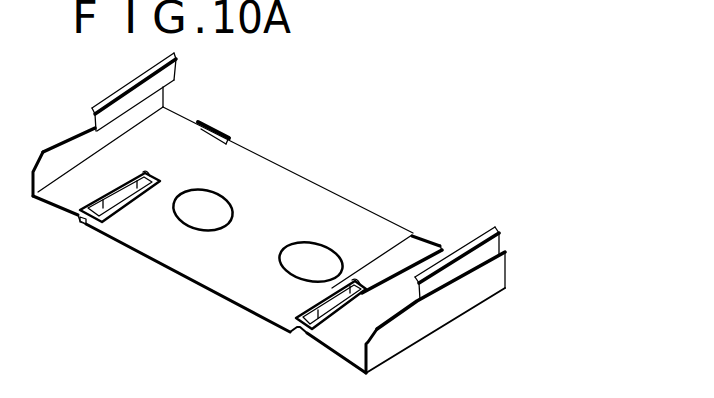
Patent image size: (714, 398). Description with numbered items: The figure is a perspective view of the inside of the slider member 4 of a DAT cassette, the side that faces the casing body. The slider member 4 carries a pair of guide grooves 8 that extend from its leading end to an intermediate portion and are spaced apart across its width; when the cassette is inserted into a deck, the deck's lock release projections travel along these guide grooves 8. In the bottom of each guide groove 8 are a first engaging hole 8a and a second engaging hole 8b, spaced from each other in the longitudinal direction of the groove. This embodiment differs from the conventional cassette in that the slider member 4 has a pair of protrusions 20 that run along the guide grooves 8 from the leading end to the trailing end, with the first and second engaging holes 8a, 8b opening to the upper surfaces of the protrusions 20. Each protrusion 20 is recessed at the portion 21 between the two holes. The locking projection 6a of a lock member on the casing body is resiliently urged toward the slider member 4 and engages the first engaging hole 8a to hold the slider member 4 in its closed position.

The slider member 4 is at (345, 192).
The guide groove 8 is at (90, 226).
The first engaging hole 8a is at (128, 222).
The second engaging hole 8b is at (155, 190).
The protrusion 20 is at (206, 126).
The recessed portion 21 is at (139, 198).
The locking projection 6a is at (431, 0).